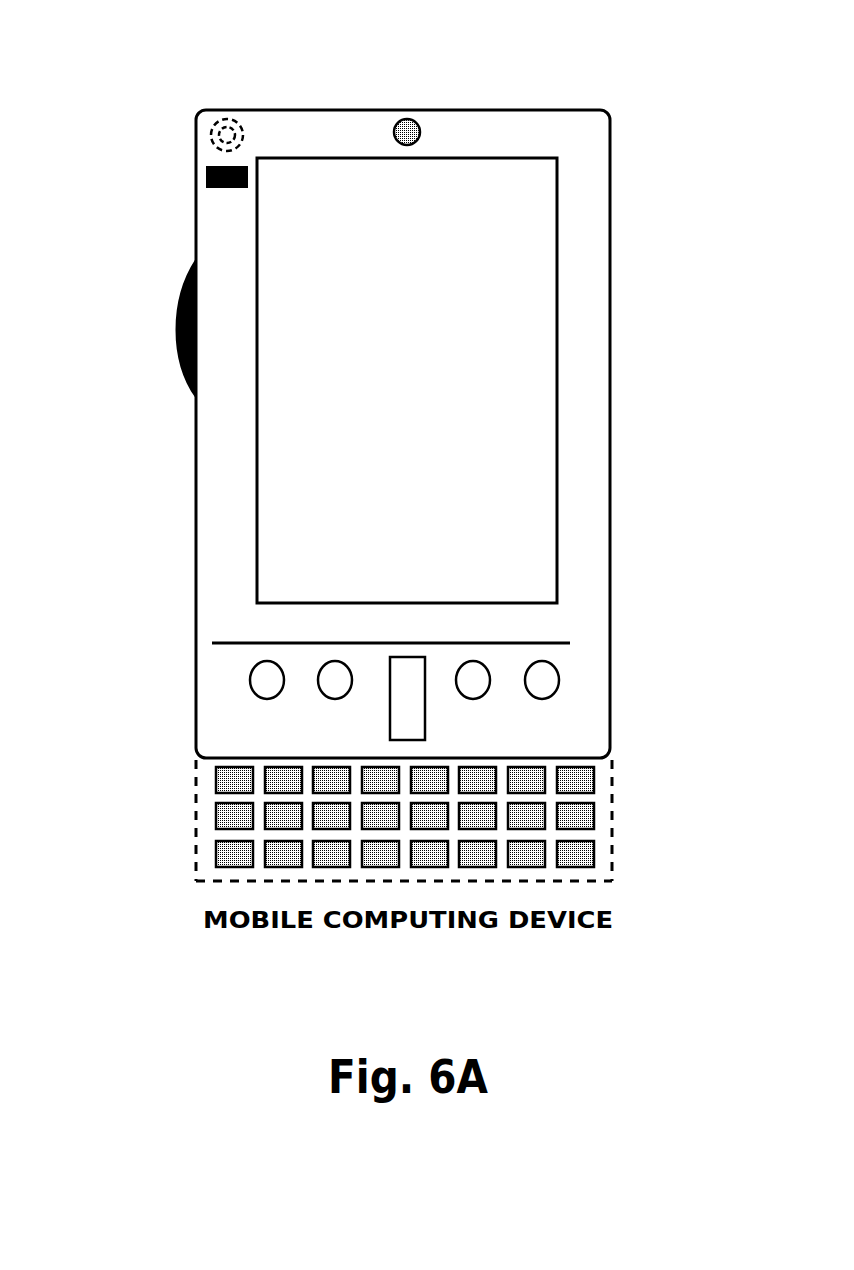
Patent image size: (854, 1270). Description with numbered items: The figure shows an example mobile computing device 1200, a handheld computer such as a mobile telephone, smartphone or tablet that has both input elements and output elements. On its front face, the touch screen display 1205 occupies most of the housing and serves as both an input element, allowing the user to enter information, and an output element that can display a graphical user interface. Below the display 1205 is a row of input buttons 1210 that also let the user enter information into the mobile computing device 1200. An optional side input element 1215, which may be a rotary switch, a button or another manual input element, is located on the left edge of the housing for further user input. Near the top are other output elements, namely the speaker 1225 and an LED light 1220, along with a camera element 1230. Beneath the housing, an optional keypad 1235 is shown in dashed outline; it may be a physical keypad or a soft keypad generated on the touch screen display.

The mobile computing device 1200 is at (610, 128).
The touch screen display 1205 is at (283, 540).
The input buttons 1210 is at (542, 696).
The side input element 1215 is at (176, 334).
The LED light 1220 is at (208, 170).
The speaker 1225 is at (210, 126).
The camera 1230 is at (416, 121).
The keypad 1235 is at (194, 848).